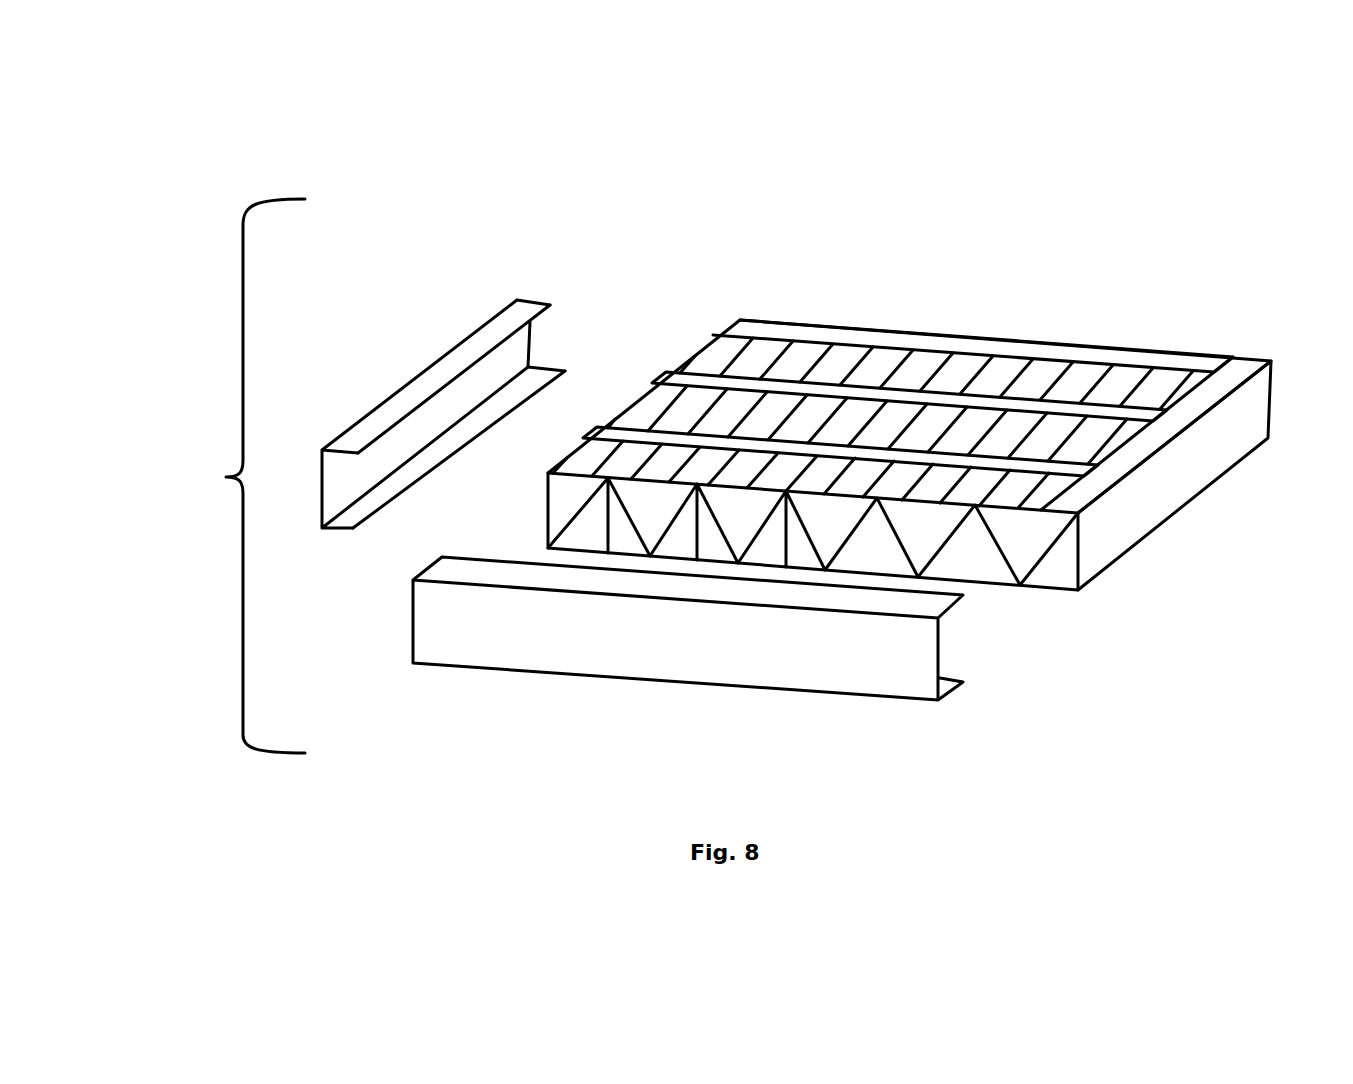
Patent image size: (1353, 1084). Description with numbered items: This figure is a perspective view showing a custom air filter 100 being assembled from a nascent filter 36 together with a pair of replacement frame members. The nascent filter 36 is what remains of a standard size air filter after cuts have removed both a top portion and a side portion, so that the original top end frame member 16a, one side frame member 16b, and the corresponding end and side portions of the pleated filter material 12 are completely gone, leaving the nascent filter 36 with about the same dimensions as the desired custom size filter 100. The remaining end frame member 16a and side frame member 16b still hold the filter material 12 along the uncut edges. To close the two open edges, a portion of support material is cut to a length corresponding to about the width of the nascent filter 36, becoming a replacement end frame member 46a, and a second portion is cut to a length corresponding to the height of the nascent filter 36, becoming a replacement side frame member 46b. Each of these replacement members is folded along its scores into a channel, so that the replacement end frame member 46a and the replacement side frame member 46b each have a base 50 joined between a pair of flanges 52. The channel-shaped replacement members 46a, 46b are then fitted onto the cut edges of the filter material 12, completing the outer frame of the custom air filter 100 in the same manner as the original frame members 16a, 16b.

The custom air filter 100 is at (226, 477).
The replacement end frame member 46a is at (496, 327).
The replacement side frame member 46b is at (583, 620).
The base 50 is at (490, 378).
The flanges 52 is at (458, 442).
The nascent filter 36 is at (909, 340).
The side frame member 16b is at (1098, 340).
The end frame member 16a is at (1110, 515).
The filter material 12 is at (967, 549).